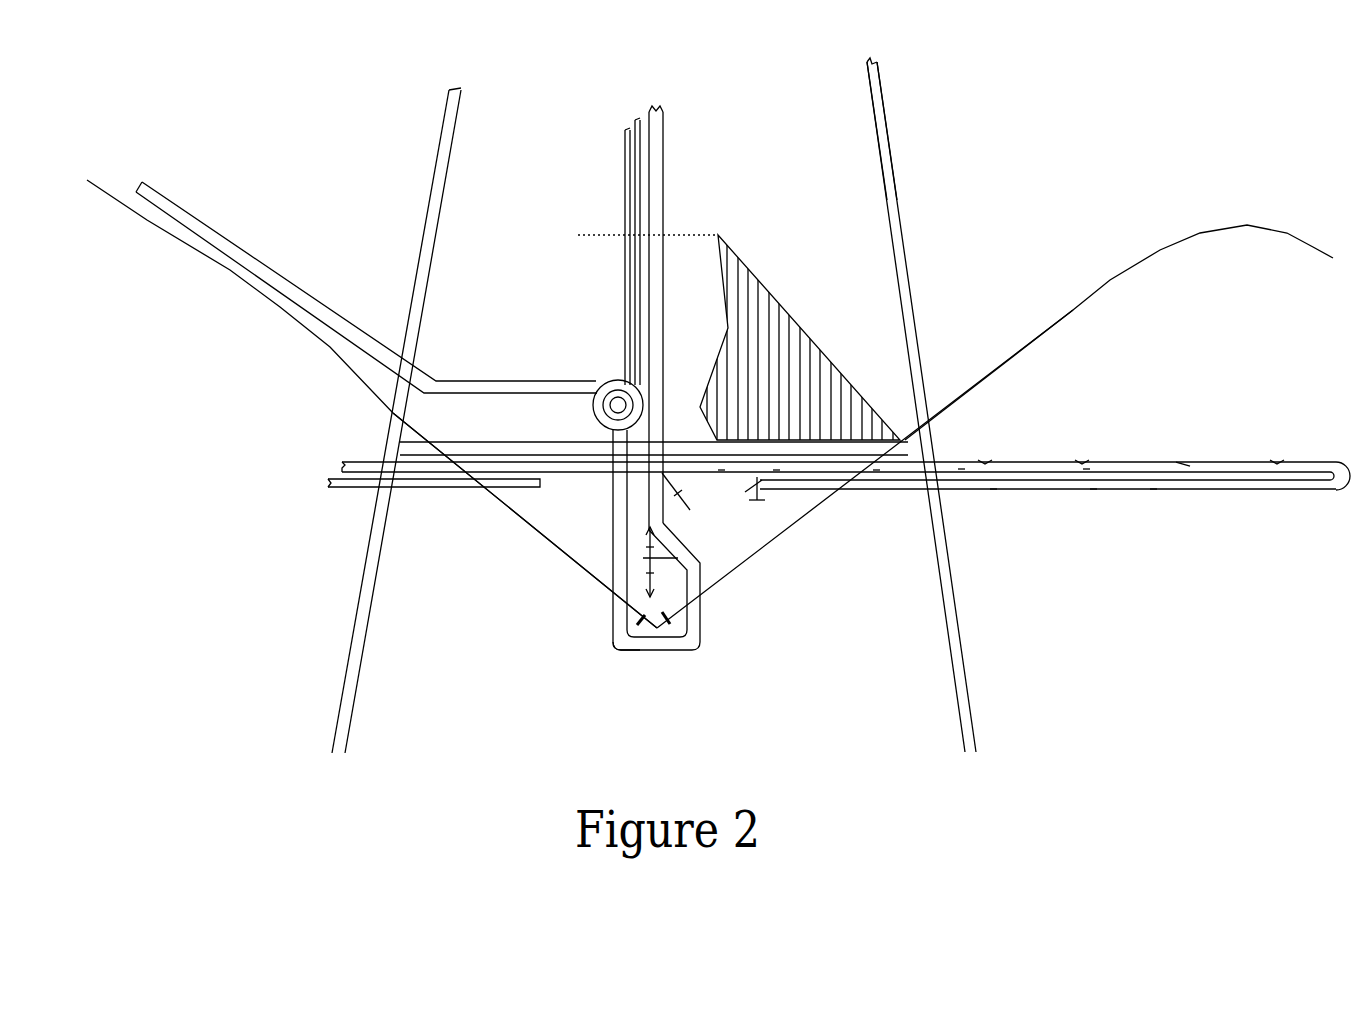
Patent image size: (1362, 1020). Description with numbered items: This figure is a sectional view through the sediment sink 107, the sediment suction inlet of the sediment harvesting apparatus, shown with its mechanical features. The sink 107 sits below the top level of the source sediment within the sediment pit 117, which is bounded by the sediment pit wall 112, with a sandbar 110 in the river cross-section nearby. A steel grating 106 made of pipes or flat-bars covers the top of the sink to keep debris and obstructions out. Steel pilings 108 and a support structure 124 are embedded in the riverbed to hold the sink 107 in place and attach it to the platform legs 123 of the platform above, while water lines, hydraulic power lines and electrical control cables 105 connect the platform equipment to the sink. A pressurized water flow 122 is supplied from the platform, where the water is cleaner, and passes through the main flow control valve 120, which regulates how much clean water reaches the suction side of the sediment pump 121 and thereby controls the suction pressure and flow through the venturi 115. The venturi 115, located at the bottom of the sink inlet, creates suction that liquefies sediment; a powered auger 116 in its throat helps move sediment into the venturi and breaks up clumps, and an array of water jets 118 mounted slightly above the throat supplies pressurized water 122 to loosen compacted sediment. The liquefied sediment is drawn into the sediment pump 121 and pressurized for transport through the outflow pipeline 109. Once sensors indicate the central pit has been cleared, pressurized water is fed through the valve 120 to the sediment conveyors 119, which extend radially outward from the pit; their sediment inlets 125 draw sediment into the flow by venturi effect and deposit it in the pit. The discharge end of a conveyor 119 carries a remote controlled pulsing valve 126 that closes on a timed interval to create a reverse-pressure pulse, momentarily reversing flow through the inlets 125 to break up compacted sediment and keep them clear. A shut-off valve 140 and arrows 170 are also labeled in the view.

The electrical control cables 105 is at (627, 177).
The steel grating 106 is at (825, 393).
The sediment sink 107 is at (583, 533).
The pilings 108 is at (365, 662).
The pipeline 109 is at (293, 283).
The sandbar 110 is at (710, 404).
The sediment pit wall 112 is at (1042, 333).
The venturi 115 is at (647, 638).
The auger 116 is at (673, 627).
The sediment pit 117 is at (771, 252).
The water jets 118 is at (678, 558).
The sediment conveyors 119 is at (435, 493).
The main flow control valve 120 is at (693, 506).
The sediment pump 121 is at (603, 383).
The pressurized water flow 122 is at (655, 163).
The platform legs 123 is at (868, 102).
The support structure 124 is at (407, 448).
The sediment inlets 125 is at (1003, 450).
The remote controlled pulsing valve 126 is at (767, 478).
The shut-off valve 140 is at (622, 635).
The arrows 170 is at (1183, 467).